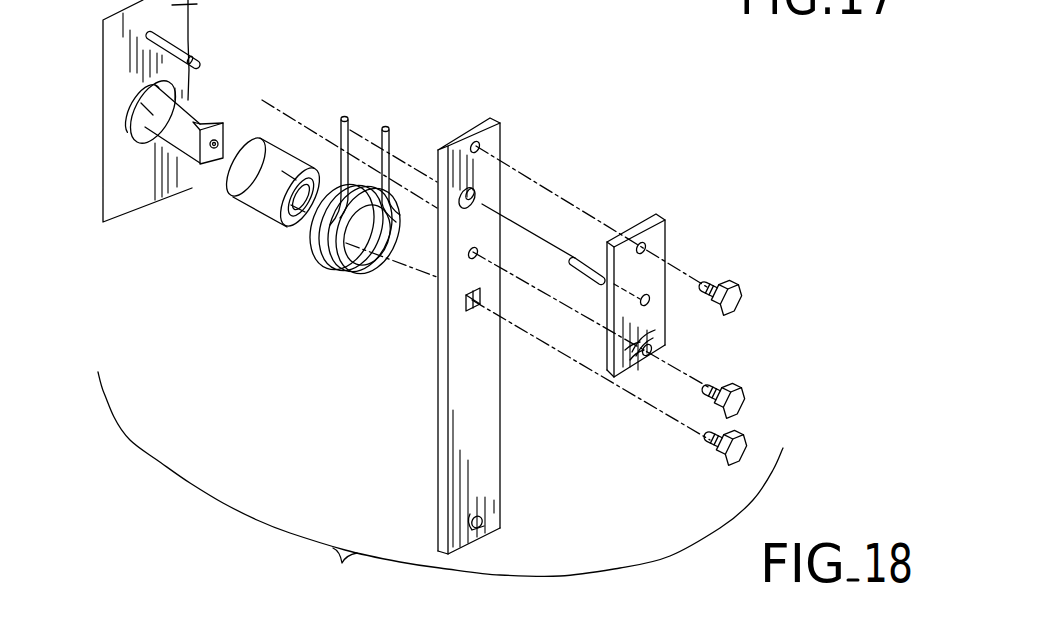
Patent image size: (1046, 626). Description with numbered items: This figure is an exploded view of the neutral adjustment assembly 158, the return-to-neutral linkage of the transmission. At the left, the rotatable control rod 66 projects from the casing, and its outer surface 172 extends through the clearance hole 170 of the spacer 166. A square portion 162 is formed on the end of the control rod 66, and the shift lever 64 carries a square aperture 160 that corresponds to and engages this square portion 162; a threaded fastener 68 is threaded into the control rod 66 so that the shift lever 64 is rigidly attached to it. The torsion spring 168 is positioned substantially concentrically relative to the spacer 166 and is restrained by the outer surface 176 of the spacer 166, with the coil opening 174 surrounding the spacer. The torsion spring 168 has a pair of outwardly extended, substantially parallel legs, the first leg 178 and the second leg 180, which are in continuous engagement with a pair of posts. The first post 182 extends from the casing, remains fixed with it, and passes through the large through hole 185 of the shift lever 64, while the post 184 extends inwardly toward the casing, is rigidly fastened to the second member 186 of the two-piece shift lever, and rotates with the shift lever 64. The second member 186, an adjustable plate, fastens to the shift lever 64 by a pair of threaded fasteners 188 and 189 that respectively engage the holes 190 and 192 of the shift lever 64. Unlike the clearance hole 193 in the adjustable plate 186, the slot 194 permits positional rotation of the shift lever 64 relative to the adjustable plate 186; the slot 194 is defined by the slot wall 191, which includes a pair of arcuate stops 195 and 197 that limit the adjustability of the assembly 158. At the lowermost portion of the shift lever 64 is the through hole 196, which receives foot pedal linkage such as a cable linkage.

The neutral adjustment assembly 158 is at (440, 298).
The first post 182 is at (198, 50).
The control rod 66 is at (205, 104).
The outer surface of control rod 172 is at (190, 133).
The square portion 162 is at (249, 108).
The spacer 166 is at (263, 189).
The outer surface of spacer 176 is at (280, 191).
The clearance hole 170 is at (302, 229).
The torsion spring 168 is at (370, 184).
The spring coil opening 174 is at (357, 233).
The second leg 180 is at (347, 118).
The first leg 178 is at (391, 128).
The shift lever 64 is at (494, 321).
The hole 190 is at (479, 148).
The large through hole 185 is at (479, 200).
The hole 192 is at (479, 255).
The square aperture 160 is at (473, 305).
The through hole 196 is at (486, 523).
The post 184 is at (592, 258).
The second member (adjustable plate) 186 is at (655, 301).
The clearance hole 193 is at (646, 249).
The arcuate stop 197 is at (644, 335).
The slot wall 191 is at (652, 350).
The slot 194 is at (640, 366).
The arcuate stop 195 is at (641, 355).
The threaded fastener 188 is at (748, 300).
The threaded fastener 189 is at (750, 400).
The threaded fastener 68 is at (758, 448).